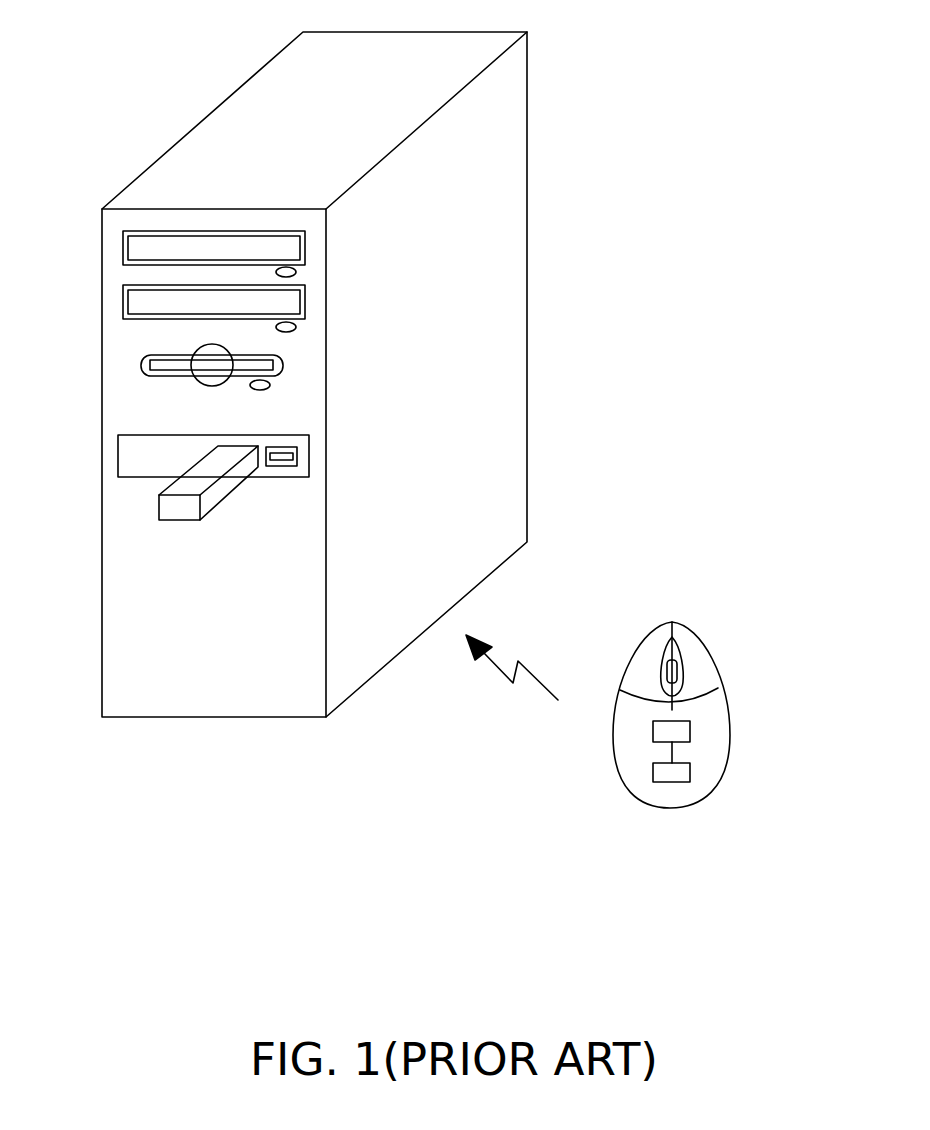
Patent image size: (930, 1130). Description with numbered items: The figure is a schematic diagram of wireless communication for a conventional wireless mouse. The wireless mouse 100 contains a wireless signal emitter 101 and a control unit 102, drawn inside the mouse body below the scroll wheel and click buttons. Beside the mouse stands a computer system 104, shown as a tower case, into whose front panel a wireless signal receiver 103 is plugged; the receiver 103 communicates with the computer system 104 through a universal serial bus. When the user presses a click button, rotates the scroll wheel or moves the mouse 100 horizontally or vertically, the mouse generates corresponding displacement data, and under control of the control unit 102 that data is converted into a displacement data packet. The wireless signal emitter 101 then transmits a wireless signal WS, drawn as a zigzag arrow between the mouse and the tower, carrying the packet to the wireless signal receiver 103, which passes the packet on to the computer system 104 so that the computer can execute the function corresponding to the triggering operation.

The wireless mouse 100 is at (692, 622).
The wireless signal emitter 101 is at (678, 725).
The control unit 102 is at (680, 775).
The wireless signal receiver 103 is at (213, 467).
The computer system 104 is at (277, 97).
The wireless signal WS is at (522, 667).